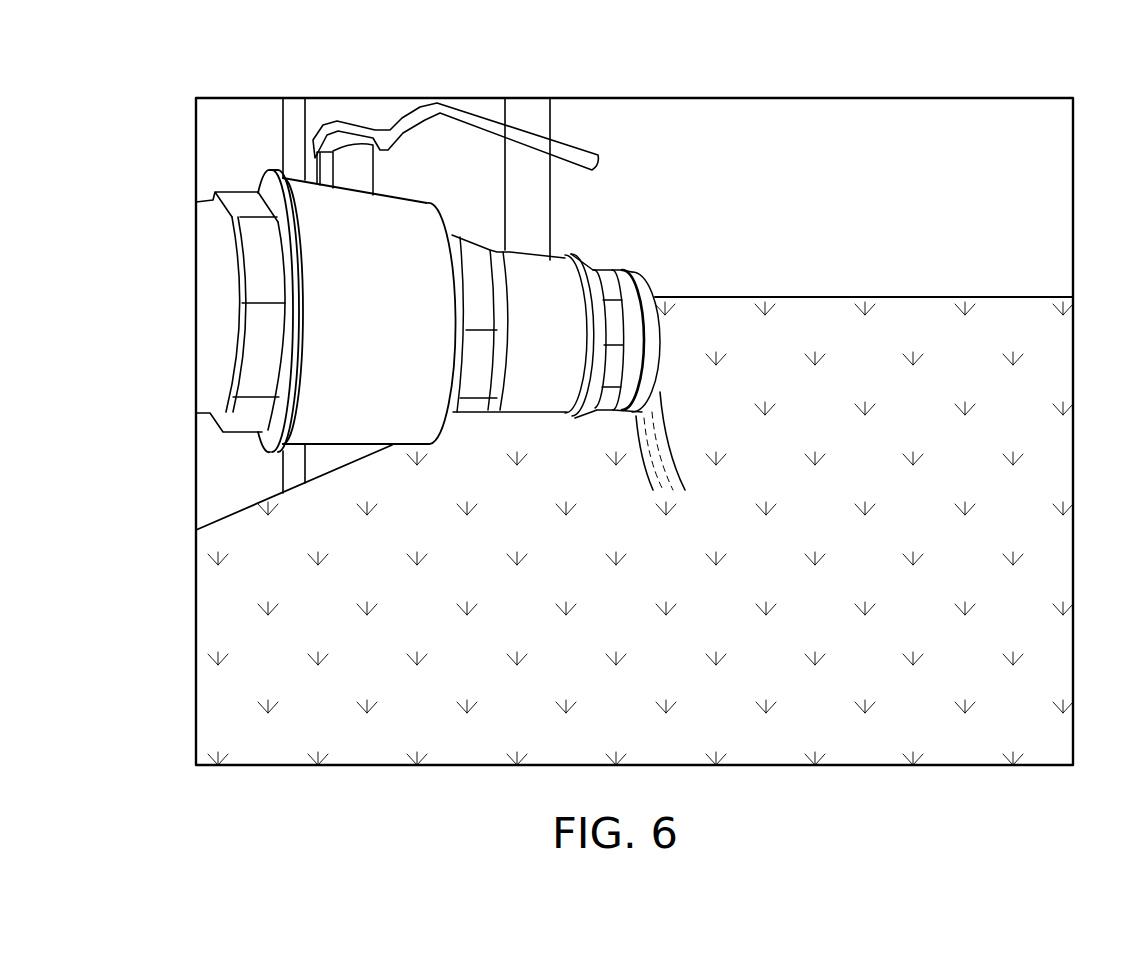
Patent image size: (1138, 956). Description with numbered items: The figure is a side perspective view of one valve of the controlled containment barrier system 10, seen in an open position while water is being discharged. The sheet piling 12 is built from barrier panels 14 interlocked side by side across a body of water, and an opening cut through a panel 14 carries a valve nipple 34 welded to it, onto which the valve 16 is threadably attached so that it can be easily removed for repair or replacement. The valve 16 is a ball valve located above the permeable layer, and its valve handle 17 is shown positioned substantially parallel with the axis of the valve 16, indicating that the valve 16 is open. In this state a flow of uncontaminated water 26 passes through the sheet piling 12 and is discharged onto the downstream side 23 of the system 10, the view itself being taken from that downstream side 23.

The controlled containment barrier system 10 is at (162, 157).
The sheet piling 12 is at (240, 138).
The barrier panel 14 is at (240, 138).
The valve 16 is at (395, 267).
The valve handle 17 is at (363, 132).
The downstream side 23 is at (927, 393).
The uncontaminated water 26 is at (672, 442).
The valve nipple 34 is at (220, 320).